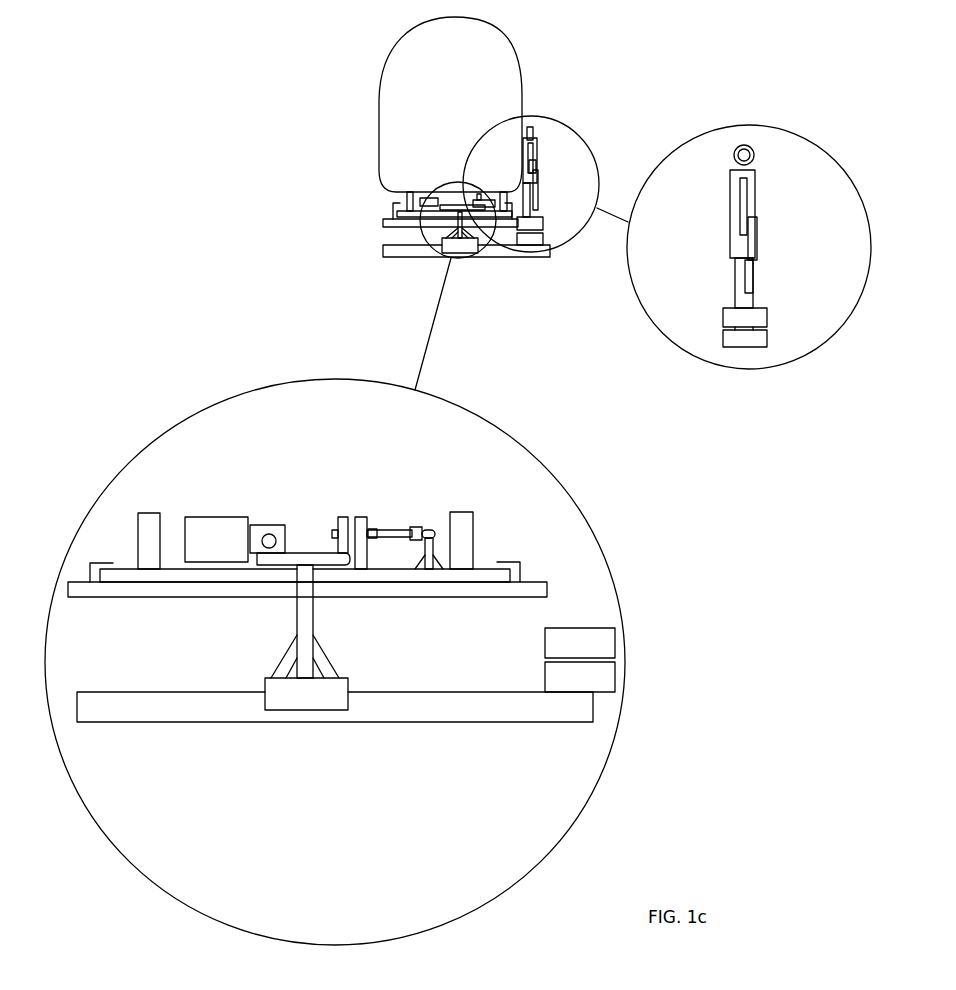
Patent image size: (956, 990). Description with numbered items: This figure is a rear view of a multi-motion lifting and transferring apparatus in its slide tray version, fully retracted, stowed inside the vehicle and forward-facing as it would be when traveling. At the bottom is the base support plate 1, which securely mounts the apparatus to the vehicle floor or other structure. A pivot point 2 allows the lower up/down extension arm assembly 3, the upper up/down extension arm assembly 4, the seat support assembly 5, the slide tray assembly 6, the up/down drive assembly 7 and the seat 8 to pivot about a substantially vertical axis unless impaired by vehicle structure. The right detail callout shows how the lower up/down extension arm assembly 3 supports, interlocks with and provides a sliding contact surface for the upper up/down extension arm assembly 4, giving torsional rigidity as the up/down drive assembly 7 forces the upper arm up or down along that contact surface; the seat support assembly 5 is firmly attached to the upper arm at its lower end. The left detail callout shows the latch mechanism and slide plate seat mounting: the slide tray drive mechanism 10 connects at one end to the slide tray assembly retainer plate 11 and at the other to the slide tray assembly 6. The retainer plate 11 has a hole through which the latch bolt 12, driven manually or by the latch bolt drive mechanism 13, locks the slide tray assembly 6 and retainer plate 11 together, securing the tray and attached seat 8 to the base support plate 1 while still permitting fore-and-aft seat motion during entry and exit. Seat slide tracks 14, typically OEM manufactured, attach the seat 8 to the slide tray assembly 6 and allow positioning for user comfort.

The base support plate 1 is at (165, 707).
The pivot point 2 is at (578, 628).
The lower up/down extension arm assembly 3 is at (750, 227).
The upper up/down extension arm assembly 4 is at (740, 245).
The seat support assembly 5 is at (177, 590).
The slide tray assembly 6 is at (388, 575).
The up/down drive assembly 7 is at (735, 150).
The seat 8 is at (415, 68).
The slide tray drive mechanism 10 is at (225, 530).
The slide tray assembly retainer plate 11 is at (322, 560).
The latch bolt 12 is at (335, 528).
The latch bolt drive mechanism 13 is at (417, 532).
The seat slide tracks 14 is at (455, 525).